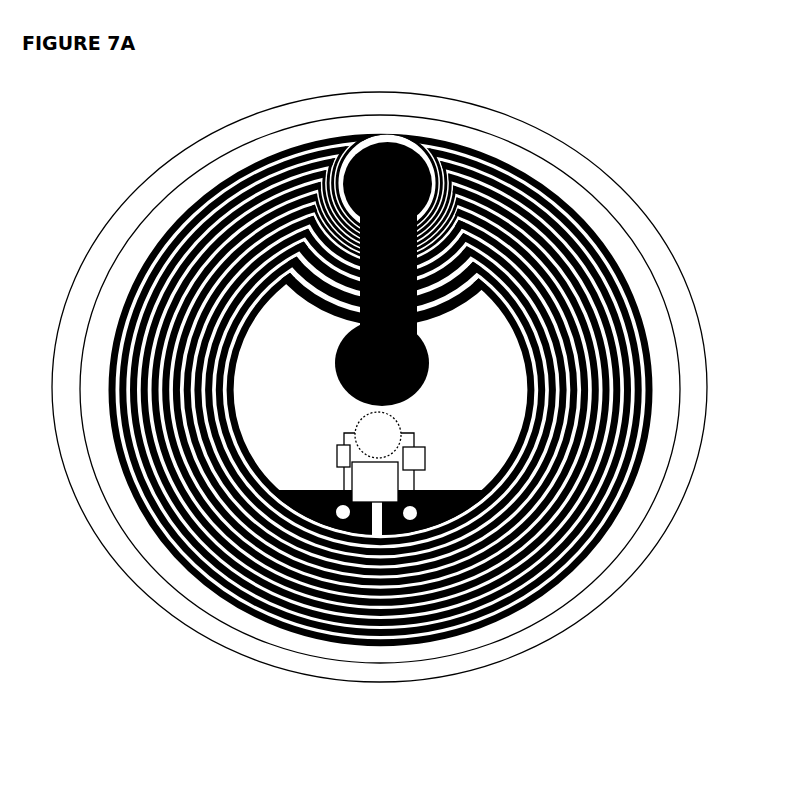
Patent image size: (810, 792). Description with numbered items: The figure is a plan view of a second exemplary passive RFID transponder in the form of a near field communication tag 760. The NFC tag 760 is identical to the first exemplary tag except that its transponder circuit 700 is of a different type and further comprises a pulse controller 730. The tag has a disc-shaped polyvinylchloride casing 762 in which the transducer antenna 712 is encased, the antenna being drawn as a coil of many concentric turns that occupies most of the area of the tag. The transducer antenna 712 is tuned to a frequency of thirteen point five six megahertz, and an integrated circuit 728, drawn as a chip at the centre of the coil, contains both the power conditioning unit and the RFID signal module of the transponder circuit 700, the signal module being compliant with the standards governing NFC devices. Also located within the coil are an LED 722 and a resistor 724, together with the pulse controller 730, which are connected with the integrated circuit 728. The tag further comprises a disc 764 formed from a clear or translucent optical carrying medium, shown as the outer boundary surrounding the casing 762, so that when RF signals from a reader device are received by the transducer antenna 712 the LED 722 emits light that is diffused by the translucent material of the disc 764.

The transponder circuit 700 is at (160, 557).
The transducer antenna 712 is at (615, 265).
The LED 722 is at (368, 414).
The resistor 724 is at (425, 457).
The integrated circuit 728 is at (366, 490).
The pulse controller 730 is at (337, 456).
The NFC tag 760 is at (82, 548).
The casing 762 is at (598, 200).
The disc 764 is at (575, 148).